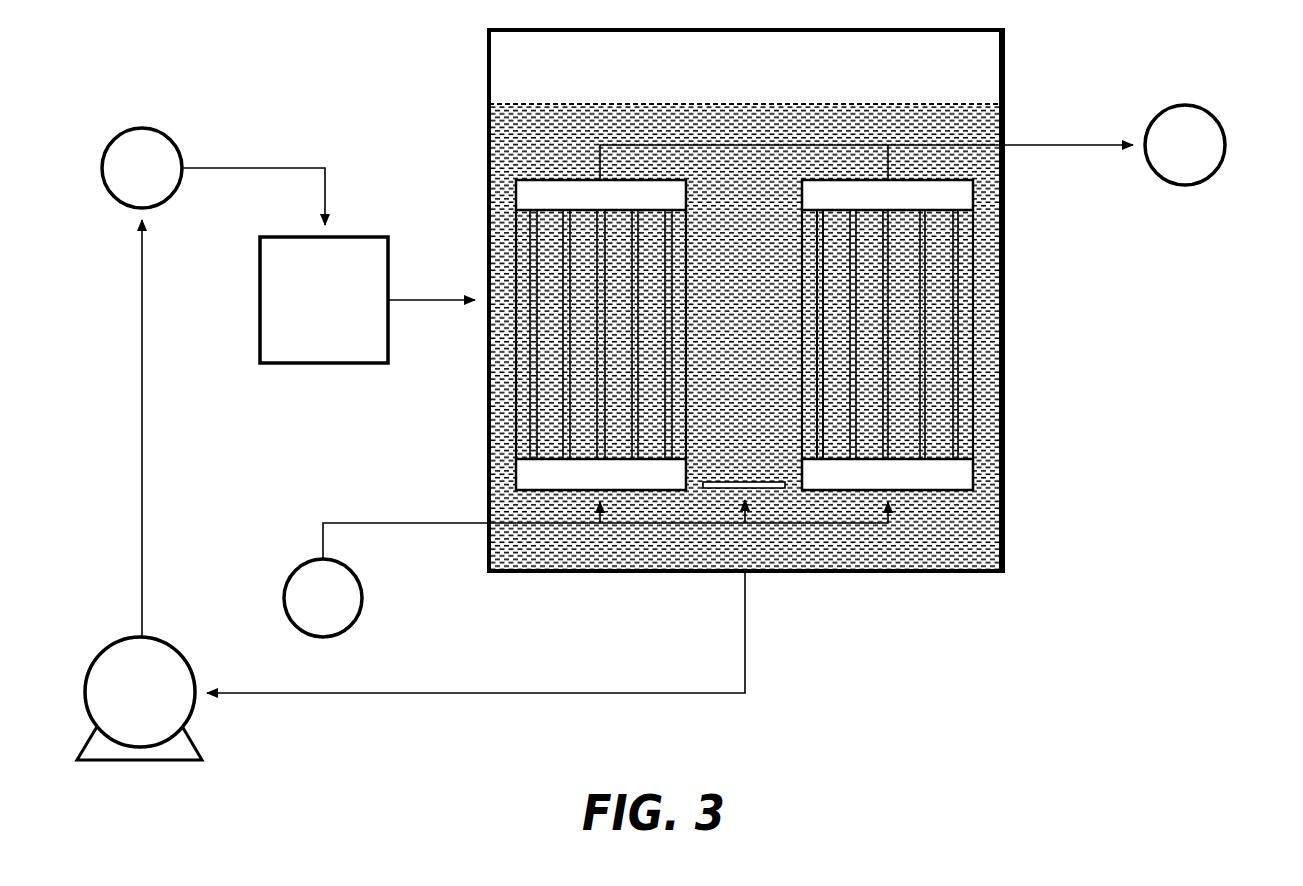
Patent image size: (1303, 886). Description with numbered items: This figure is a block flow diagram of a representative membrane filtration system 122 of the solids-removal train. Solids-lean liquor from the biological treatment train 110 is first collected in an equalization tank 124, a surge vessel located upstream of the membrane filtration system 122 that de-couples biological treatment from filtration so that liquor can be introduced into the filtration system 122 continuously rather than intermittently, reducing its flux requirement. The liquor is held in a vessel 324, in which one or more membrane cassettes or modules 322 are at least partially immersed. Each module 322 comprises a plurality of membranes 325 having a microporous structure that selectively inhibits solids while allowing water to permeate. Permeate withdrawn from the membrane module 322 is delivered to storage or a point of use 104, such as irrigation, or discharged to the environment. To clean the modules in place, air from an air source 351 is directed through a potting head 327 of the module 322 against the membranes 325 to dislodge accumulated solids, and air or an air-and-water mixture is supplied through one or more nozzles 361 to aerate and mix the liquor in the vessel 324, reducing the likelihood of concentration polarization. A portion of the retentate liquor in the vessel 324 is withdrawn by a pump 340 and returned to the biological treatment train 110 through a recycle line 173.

The storage or point of use 104 is at (1216, 112).
The biological treatment train 110 is at (116, 142).
The membrane filtration system 122 is at (1158, 320).
The equalization tank 124 is at (302, 314).
The recycle line 173 is at (142, 425).
The membrane module 322 is at (905, 338).
The vessel 324 is at (1015, 298).
The membranes 325 is at (893, 335).
The potting head 327 is at (975, 477).
The pump 340 is at (118, 706).
The air source 351 is at (284, 600).
The nozzle 361 is at (785, 486).